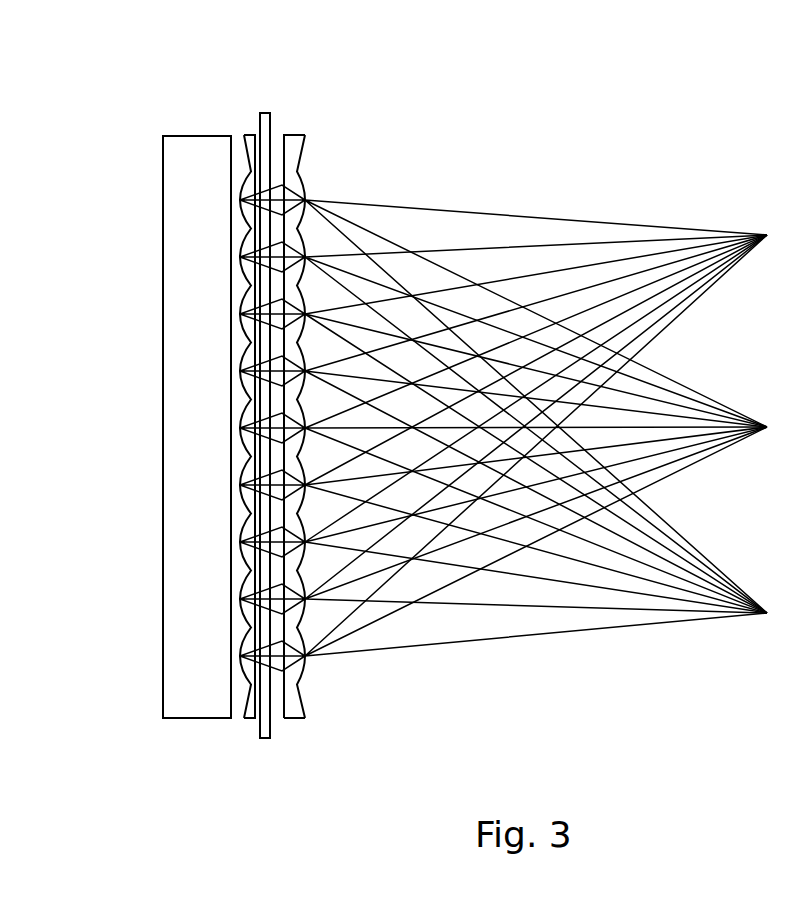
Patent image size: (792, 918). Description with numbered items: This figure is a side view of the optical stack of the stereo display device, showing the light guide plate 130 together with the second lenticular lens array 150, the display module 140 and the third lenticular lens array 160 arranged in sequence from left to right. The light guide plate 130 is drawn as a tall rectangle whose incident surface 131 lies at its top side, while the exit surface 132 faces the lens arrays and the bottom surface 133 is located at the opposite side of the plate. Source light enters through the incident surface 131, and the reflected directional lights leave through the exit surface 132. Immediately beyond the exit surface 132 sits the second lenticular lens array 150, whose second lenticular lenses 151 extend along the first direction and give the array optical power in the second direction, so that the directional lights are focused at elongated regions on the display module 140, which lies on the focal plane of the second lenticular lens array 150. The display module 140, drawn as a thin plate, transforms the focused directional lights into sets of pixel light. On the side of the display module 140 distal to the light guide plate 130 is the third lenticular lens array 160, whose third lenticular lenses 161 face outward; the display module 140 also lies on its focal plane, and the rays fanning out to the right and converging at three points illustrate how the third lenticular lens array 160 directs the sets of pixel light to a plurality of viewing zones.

The light guide plate 130 is at (193, 700).
The incident surface 131 is at (192, 135).
The exit surface 132 is at (236, 143).
The bottom surface 133 is at (163, 196).
The display module 140 is at (265, 740).
The second lenticular lens array 150 is at (275, 421).
The second lenticular lenses 151 is at (252, 157).
The third lenticular lens array 160 is at (342, 456).
The third lenticular lenses 161 is at (297, 177).